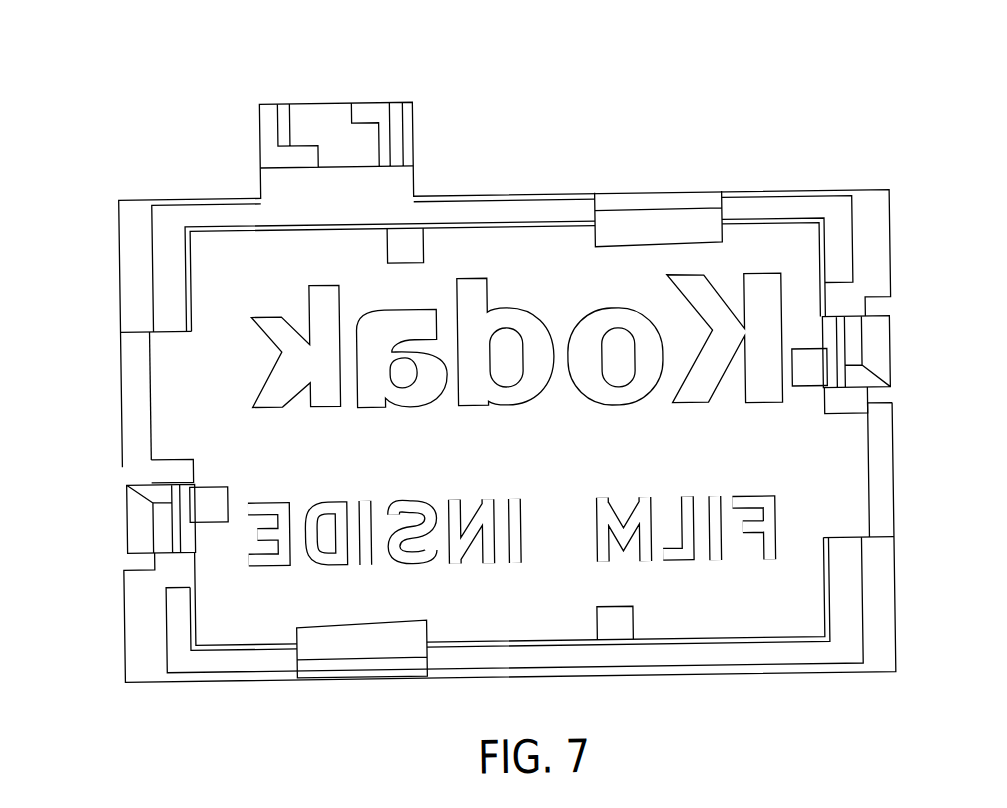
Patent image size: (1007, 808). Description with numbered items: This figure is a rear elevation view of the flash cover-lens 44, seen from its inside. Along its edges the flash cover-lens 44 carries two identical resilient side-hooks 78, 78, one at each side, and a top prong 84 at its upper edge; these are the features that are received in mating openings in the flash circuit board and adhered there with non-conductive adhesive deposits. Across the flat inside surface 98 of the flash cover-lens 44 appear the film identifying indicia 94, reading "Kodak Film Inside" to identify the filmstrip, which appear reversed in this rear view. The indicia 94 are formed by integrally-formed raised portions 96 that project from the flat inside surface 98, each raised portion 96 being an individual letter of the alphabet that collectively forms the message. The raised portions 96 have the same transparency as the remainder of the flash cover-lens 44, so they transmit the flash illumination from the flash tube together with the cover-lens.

The flash cover-lens 44 is at (822, 190).
The top prong 84 is at (410, 101).
The resilient side-hook 78 is at (883, 360).
The film identifying indicia 94 is at (287, 297).
The flat inside surface 98 is at (310, 470).
The raised portions 96 is at (514, 499).